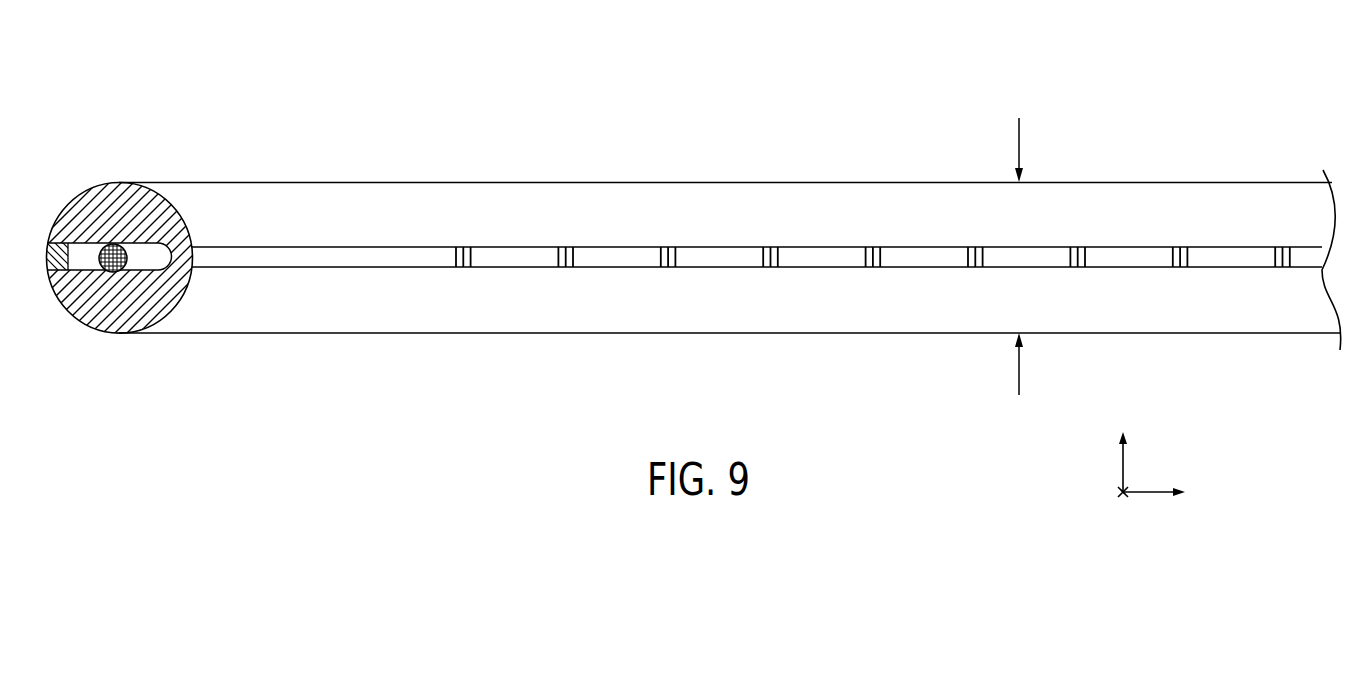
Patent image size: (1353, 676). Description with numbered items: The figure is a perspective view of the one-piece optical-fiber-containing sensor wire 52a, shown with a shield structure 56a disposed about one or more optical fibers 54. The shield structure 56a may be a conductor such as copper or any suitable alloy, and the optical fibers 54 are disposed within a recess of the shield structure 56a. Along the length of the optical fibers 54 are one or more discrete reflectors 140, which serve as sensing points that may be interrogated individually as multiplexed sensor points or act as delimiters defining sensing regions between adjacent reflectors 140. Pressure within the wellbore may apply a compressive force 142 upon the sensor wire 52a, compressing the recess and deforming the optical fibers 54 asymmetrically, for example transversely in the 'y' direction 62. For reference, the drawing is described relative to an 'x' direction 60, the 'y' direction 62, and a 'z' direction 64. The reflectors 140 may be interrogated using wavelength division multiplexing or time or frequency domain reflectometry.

The one-piece optical-fiber-containing sensor wire 52a is at (217, 84).
The shield structure 56a is at (212, 182).
The optical fibers 54 is at (106, 271).
The discrete reflectors 140 is at (455, 258).
The compressive force 142 is at (1019, 144).
The 'x' direction 60 is at (1151, 491).
The 'y' direction 62 is at (1125, 465).
The 'z' direction 64 is at (1119, 492).